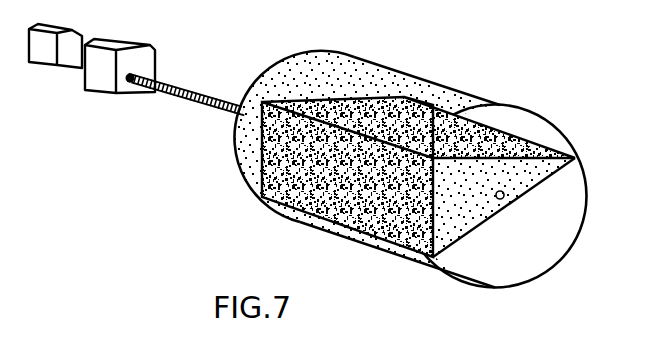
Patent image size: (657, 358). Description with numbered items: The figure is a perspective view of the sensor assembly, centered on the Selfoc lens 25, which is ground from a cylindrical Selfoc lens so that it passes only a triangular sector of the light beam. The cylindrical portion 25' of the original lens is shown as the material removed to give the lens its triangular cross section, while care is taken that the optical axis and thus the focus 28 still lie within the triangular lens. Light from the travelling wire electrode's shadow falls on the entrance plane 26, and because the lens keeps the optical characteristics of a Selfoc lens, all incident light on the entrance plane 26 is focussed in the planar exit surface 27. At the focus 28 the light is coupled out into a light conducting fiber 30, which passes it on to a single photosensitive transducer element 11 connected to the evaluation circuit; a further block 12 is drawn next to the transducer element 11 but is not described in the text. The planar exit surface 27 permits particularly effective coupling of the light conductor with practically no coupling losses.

The photosensitive transducer element 11 is at (100, 76).
The electrical plug 12 is at (45, 56).
The Selfoc lens 25 is at (422, 154).
The cylindrical portion 25' is at (367, 154).
The entrance plane 26 is at (470, 230).
The planar exit surface 27 is at (241, 160).
The focus 28 is at (507, 204).
The light conducting fiber 30 is at (184, 105).